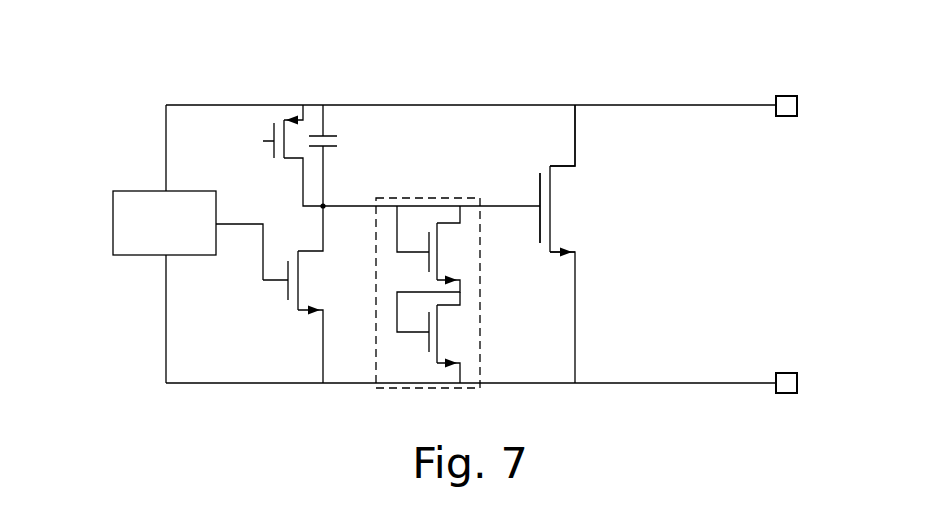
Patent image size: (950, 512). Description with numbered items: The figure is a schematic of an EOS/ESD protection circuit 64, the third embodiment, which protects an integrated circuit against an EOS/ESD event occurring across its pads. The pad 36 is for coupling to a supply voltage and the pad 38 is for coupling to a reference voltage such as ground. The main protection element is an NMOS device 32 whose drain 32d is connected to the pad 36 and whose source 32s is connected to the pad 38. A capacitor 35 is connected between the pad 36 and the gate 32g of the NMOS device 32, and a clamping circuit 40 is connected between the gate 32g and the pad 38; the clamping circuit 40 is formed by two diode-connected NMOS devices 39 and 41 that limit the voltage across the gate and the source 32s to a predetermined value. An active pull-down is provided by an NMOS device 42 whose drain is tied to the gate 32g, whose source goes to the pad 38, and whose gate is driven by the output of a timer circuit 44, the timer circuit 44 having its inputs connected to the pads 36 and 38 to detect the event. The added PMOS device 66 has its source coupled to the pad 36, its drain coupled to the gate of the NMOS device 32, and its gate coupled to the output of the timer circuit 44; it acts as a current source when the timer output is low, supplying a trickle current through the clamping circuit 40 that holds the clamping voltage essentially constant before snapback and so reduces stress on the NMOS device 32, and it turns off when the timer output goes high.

The timer circuit 44 is at (113, 212).
The PMOS device 66 is at (270, 140).
The capacitor 35 is at (343, 140).
The NMOS device 42 is at (286, 288).
The clamping circuit 40 is at (474, 390).
The diode-connected NMOS device 39 is at (452, 247).
The diode-connected NMOS device 41 is at (454, 340).
The NMOS device 32 is at (565, 216).
The gate 32g is at (541, 190).
The drain 32d is at (558, 164).
The source 32s is at (557, 258).
The pad 36 is at (777, 97).
The pad 38 is at (797, 370).
The EOS/ESD protection circuit 64 is at (797, 232).